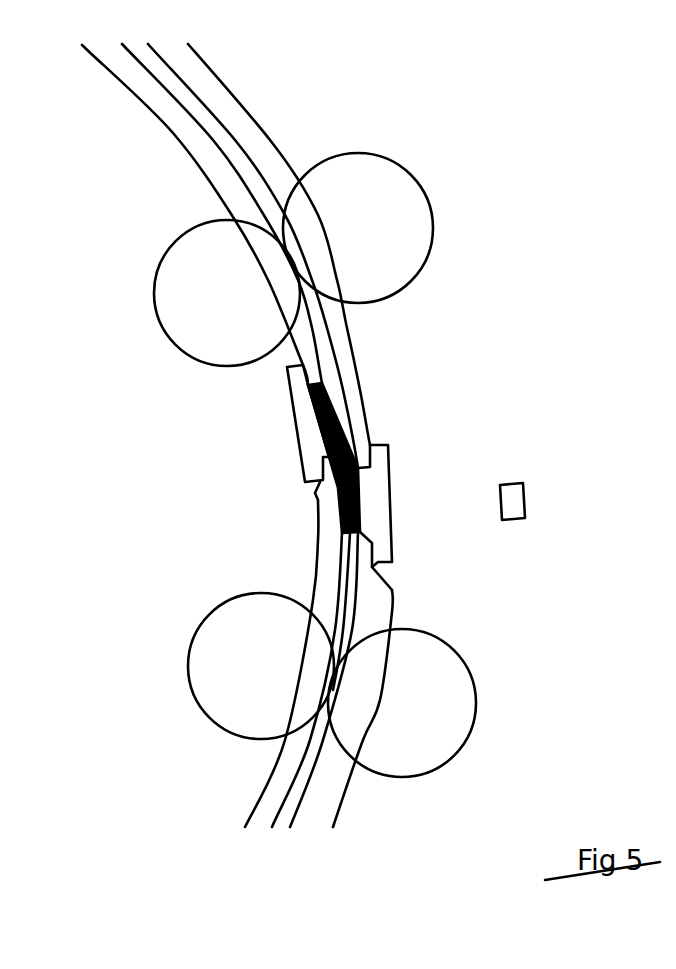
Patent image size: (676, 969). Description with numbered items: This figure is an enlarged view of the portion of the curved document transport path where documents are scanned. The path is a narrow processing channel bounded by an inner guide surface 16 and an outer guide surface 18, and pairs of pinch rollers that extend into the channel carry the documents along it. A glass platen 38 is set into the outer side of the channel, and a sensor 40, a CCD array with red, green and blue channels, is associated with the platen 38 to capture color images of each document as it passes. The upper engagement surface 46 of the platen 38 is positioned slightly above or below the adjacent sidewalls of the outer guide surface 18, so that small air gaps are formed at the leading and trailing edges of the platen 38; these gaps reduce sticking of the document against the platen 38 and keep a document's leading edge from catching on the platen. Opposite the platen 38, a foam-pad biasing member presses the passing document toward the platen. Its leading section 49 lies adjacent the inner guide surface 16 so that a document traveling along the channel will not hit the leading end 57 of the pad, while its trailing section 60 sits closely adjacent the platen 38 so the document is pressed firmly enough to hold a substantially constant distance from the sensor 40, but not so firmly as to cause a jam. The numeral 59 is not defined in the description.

The inner guide surface 16 is at (289, 366).
The outer guide surface 18 is at (325, 348).
The glass platen 38 is at (392, 485).
The sensor 40 is at (520, 483).
The upper engagement surface 46 is at (315, 428).
The leading section 49 is at (327, 403).
The leading end 57 is at (310, 388).
The lower wall portion 59 is at (338, 510).
The trailing section 60 is at (355, 533).